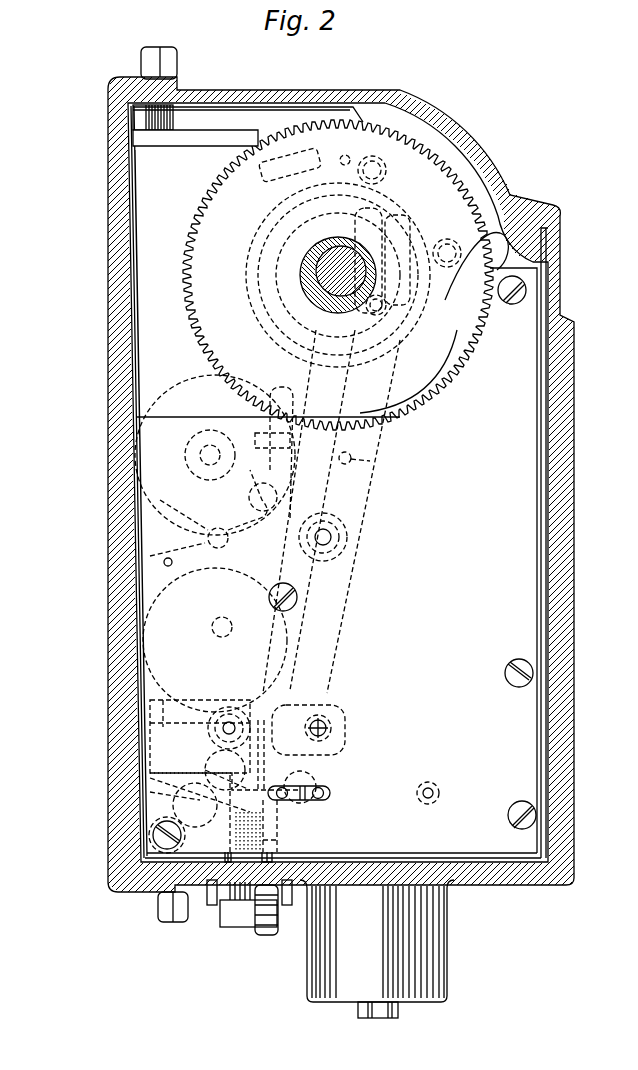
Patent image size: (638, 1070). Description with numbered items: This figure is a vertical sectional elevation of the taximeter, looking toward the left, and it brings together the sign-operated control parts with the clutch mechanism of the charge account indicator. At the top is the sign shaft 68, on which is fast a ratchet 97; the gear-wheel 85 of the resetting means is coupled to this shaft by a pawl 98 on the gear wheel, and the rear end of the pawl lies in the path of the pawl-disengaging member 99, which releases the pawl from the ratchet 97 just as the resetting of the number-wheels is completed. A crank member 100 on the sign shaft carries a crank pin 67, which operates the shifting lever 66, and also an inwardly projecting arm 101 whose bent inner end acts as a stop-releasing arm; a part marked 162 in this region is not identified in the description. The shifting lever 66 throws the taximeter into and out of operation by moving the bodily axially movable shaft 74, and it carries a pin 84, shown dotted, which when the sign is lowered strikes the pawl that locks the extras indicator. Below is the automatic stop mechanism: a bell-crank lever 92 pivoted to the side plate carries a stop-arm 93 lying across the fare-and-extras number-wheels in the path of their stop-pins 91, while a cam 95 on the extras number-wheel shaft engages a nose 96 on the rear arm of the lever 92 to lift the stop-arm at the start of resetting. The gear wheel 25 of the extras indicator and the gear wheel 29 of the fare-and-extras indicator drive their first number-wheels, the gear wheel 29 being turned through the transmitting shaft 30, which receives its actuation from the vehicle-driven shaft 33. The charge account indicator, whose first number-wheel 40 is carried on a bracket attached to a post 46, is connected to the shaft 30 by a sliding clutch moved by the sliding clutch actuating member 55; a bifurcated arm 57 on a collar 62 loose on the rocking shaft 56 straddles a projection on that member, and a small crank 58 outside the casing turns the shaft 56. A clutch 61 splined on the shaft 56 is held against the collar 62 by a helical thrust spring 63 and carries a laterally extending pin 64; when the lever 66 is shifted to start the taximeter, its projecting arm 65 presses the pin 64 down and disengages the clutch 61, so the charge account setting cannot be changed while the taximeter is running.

The pawl-disengaging member 99 is at (292, 134).
The sign shaft 68 is at (333, 312).
The ratchet 97 is at (255, 295).
The crank member 100 is at (292, 200).
The pawl 162 is at (268, 168).
The inwardly projecting arm 101 is at (322, 172).
The crank pin 67 is at (404, 308).
The pawl 98 is at (398, 348).
The gear-wheel 85 is at (245, 417).
The cam 95 is at (265, 453).
The pin 84 is at (370, 457).
The bell-crank lever 92 is at (280, 477).
The nose 96 is at (247, 463).
The gear wheel 25 is at (162, 505).
The stop-arm 93 is at (175, 555).
The stop-pin 91 is at (215, 640).
The transmitting shaft 30 is at (229, 727).
The gear wheel 29 is at (184, 693).
The shifting lever 66 is at (327, 683).
The shaft 33 is at (330, 728).
The sliding clutch actuating member 55 is at (214, 770).
The arm 57 is at (227, 771).
The collar 62 is at (262, 773).
The pin 64 is at (300, 778).
The axially movable shaft 74 is at (292, 783).
The projecting arm 65 is at (200, 802).
The number-wheel 40 is at (181, 834).
The post 46 is at (177, 838).
The clutch 61 is at (235, 813).
The helical thrust spring 63 is at (281, 826).
The rocking shaft 56 is at (272, 858).
The crank 58 is at (267, 934).